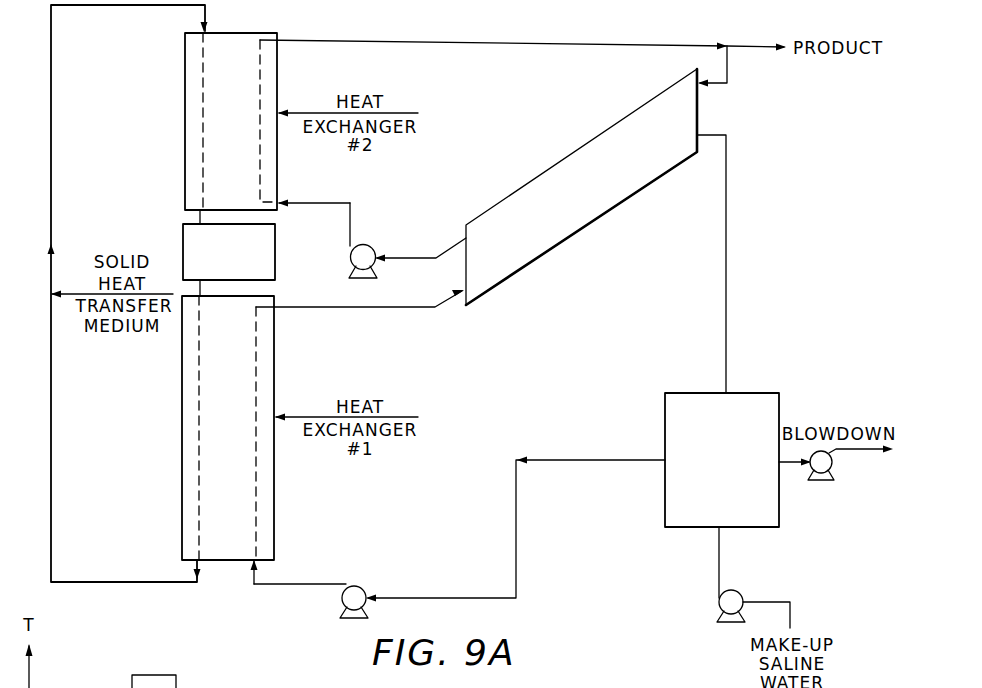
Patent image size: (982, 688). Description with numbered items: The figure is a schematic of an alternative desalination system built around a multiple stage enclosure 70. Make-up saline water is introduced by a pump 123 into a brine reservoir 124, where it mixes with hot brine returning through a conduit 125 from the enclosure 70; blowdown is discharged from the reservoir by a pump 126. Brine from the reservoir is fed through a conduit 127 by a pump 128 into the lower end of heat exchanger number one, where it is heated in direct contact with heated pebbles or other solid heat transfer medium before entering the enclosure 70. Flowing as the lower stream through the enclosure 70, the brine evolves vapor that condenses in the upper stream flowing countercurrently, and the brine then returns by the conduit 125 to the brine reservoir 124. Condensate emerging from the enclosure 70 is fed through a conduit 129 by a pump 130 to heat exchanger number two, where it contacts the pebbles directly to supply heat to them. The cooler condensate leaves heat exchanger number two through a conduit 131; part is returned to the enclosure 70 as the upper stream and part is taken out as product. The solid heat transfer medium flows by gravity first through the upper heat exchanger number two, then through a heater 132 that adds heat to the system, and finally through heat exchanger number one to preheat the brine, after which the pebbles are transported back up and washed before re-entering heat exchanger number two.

The multiple stage enclosure 70 is at (578, 151).
The pump 123 is at (741, 591).
The brine reservoir 124 is at (779, 402).
The conduit 125 is at (726, 240).
The pump 126 is at (833, 466).
The conduit 127 is at (469, 596).
The pump 128 is at (365, 587).
The conduit 129 is at (403, 259).
The pump 130 is at (367, 246).
The conduit 131 is at (518, 45).
The heater 132 is at (183, 233).